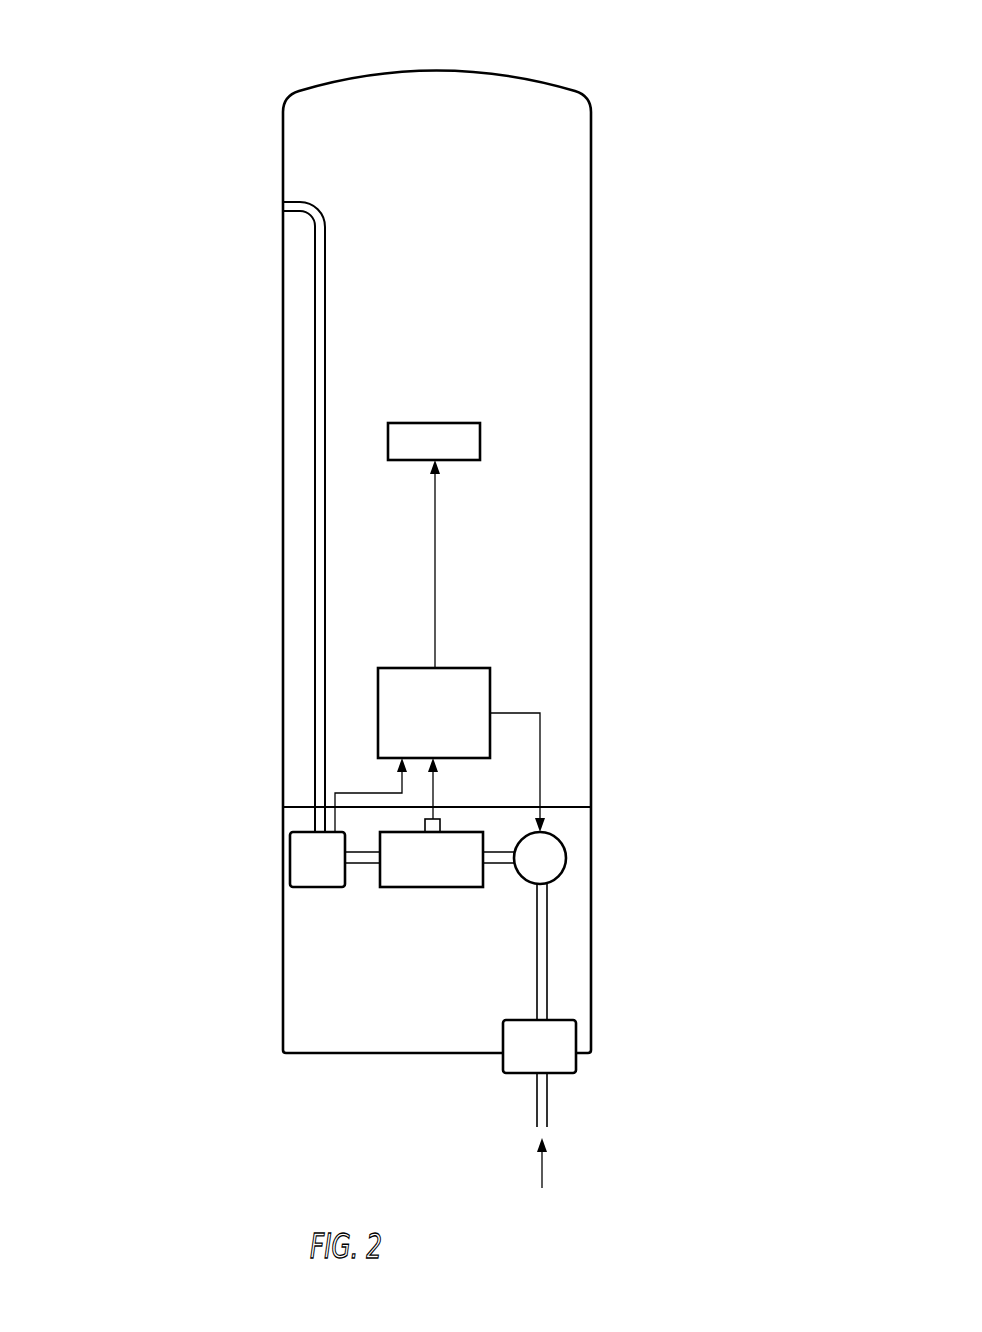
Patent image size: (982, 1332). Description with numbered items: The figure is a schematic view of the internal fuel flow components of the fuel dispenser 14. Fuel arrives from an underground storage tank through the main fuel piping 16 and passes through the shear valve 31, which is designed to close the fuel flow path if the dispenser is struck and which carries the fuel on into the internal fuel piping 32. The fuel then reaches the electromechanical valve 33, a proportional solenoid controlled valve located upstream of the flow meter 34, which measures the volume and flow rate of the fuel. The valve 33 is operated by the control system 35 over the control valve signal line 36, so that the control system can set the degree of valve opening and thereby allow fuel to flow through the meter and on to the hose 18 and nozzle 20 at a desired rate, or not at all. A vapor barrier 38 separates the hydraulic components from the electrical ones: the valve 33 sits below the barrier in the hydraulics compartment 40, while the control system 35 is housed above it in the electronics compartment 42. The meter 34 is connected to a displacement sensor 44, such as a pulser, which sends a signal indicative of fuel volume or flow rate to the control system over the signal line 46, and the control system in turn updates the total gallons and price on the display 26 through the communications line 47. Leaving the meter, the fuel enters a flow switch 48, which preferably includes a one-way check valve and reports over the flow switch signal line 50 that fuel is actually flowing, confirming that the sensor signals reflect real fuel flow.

The fuel dispenser 14 is at (648, 97).
The main fuel piping 16 is at (548, 1108).
The hose 18 is at (137, 188).
The nozzle 20 is at (283, 207).
The display 26 is at (435, 423).
The shear valve 31 is at (565, 1020).
The internal fuel piping 32 is at (315, 533).
The electromechanical valve 33 is at (566, 853).
The flow meter 34 is at (415, 887).
The control system 35 is at (462, 668).
The control valve signal line 36 is at (544, 737).
The vapor barrier 38 is at (566, 807).
The hydraulics compartment 40 is at (302, 945).
The electronics compartment 42 is at (546, 516).
The displacement sensor 44 is at (442, 826).
The signal line 46 is at (437, 795).
The communications line 47 is at (436, 580).
The flow switch 48 is at (290, 862).
The flow switch signal line 50 is at (377, 793).